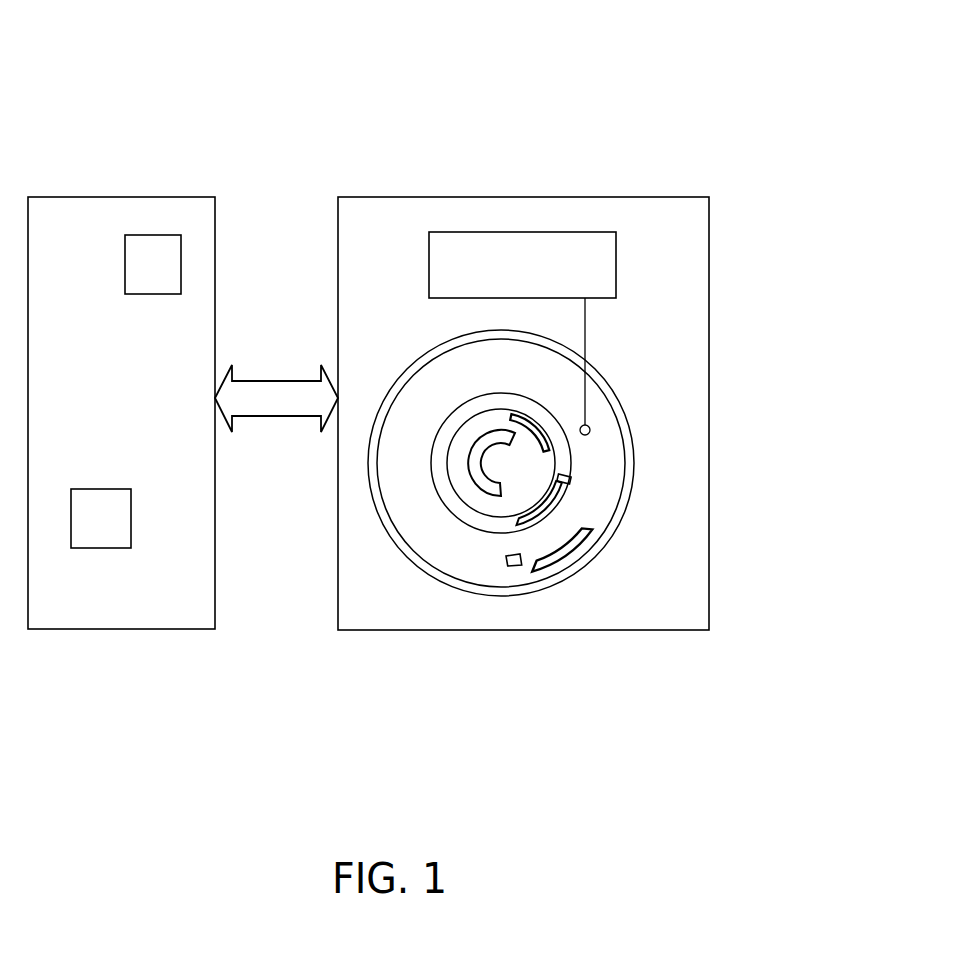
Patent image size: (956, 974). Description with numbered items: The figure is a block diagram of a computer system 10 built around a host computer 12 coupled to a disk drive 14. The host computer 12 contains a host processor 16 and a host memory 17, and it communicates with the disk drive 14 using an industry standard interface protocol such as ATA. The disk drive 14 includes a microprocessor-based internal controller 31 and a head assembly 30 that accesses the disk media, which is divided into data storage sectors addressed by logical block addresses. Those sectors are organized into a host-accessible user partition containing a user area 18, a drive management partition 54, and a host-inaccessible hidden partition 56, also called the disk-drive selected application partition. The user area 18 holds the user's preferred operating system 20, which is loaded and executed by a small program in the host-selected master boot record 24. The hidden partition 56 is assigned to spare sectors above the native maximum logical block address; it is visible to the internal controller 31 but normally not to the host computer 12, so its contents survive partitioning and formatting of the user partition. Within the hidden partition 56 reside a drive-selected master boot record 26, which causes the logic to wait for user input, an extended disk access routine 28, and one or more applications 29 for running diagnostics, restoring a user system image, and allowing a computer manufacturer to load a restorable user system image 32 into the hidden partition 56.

The computer system 10 is at (285, 105).
The host computer 12 is at (133, 426).
The disk drive 14 is at (585, 197).
The host processor 16 is at (165, 277).
The host memory 17 is at (114, 531).
The user area 18 is at (537, 399).
The operating system 20 is at (567, 547).
The host-selected master boot record 24 is at (513, 567).
The drive-selected master boot record 26 is at (571, 483).
The extended disk access routine 28 is at (522, 517).
The application 29 is at (493, 482).
The head assembly 30 is at (592, 428).
The internal controller 31 is at (534, 277).
The restorable user system image 32 is at (552, 449).
The drive management partition 54 is at (600, 387).
The host-inaccessible hidden partition 56 is at (560, 464).